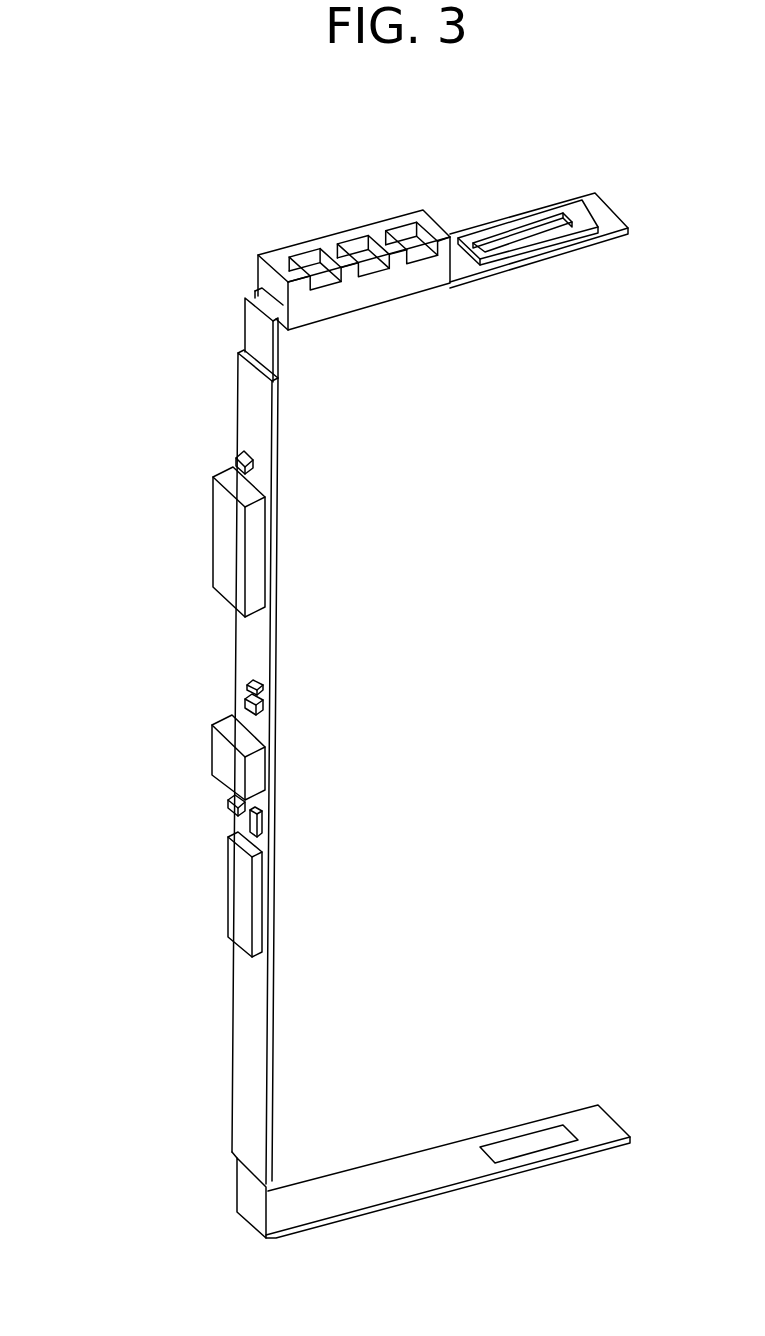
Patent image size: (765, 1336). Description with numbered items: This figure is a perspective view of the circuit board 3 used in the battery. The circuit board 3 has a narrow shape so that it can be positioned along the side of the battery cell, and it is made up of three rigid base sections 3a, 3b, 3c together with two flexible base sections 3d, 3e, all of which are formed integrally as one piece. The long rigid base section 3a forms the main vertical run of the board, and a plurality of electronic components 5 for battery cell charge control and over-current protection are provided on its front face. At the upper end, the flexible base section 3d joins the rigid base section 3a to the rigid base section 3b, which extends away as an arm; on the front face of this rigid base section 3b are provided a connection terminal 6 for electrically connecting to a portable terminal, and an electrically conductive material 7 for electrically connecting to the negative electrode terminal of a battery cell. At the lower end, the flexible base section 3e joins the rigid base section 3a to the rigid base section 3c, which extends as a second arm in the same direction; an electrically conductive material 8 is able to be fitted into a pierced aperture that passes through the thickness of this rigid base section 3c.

The circuit board 3 is at (224, 226).
The rigid base section 3a is at (273, 978).
The rigid base section 3b is at (607, 215).
The rigid base section 3c is at (337, 1220).
The flexible base section 3d is at (257, 332).
The flexible base section 3e is at (243, 1195).
The electronic components 5 is at (192, 621).
The connection terminal 6 is at (347, 307).
The electrically conductive material 7 is at (567, 212).
The electrically conductive material 8 is at (530, 1140).